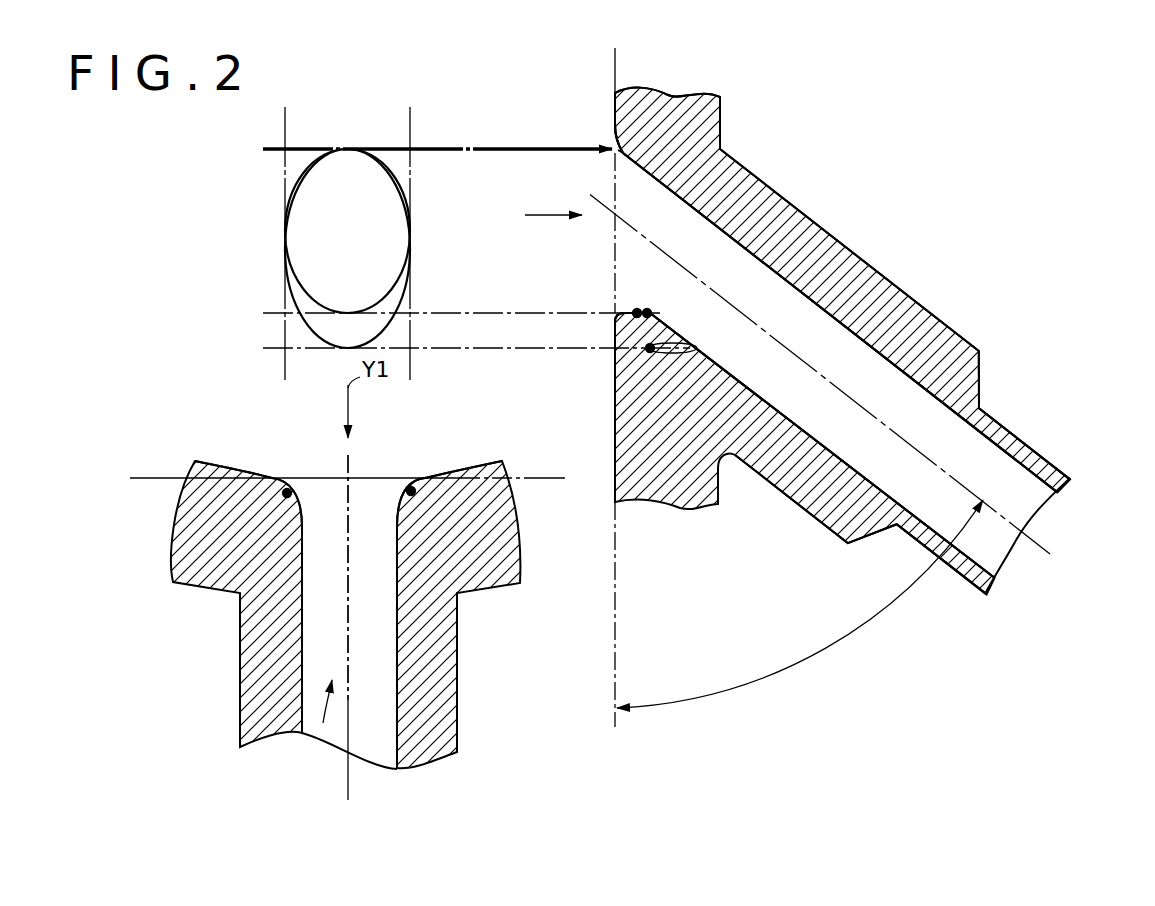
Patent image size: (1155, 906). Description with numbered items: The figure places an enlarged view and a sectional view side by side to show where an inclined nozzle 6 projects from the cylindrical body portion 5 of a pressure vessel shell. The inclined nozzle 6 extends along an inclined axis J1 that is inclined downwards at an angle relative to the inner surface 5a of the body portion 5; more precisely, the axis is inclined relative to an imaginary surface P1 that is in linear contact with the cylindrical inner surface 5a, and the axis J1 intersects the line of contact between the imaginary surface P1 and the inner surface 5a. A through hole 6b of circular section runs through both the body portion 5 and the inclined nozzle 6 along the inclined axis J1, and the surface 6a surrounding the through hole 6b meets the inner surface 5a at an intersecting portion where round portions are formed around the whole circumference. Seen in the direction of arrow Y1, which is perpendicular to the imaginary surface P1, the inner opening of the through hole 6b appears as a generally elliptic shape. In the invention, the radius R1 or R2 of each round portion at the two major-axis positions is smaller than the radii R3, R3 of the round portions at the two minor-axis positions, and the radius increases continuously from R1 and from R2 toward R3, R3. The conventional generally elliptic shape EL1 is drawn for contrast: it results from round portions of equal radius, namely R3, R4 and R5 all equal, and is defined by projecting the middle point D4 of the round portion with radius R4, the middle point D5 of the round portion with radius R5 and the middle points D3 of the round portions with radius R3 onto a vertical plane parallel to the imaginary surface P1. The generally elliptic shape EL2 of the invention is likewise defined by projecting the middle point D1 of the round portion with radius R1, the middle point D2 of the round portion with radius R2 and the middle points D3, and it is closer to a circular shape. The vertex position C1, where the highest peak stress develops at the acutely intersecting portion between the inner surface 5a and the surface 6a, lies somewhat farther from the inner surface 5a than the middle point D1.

The cylindrical body portion 5 is at (203, 582).
The inner surface 5a is at (257, 462).
The inclined nozzle 6 is at (866, 276).
The surface surrounding the through hole 6a is at (390, 725).
The through hole 6b is at (306, 733).
The generally elliptic shape EL1 is at (300, 331).
The generally elliptic shape EL2 is at (302, 287).
The arrow Y1 is at (530, 216).
The imaginary surface P1 is at (540, 476).
The inclined axis J1 is at (345, 790).
The radius R1 is at (618, 316).
The radius R2 is at (616, 163).
The radius R3 is at (276, 475).
The radius R4 is at (626, 358).
The radius R5 is at (610, 152).
The middle point D1 is at (636, 311).
The middle point D2 is at (685, 108).
The middle point D3 is at (288, 492).
The middle point D4 is at (652, 348).
The middle point D5 is at (648, 93).
The vertex position C1 is at (647, 311).